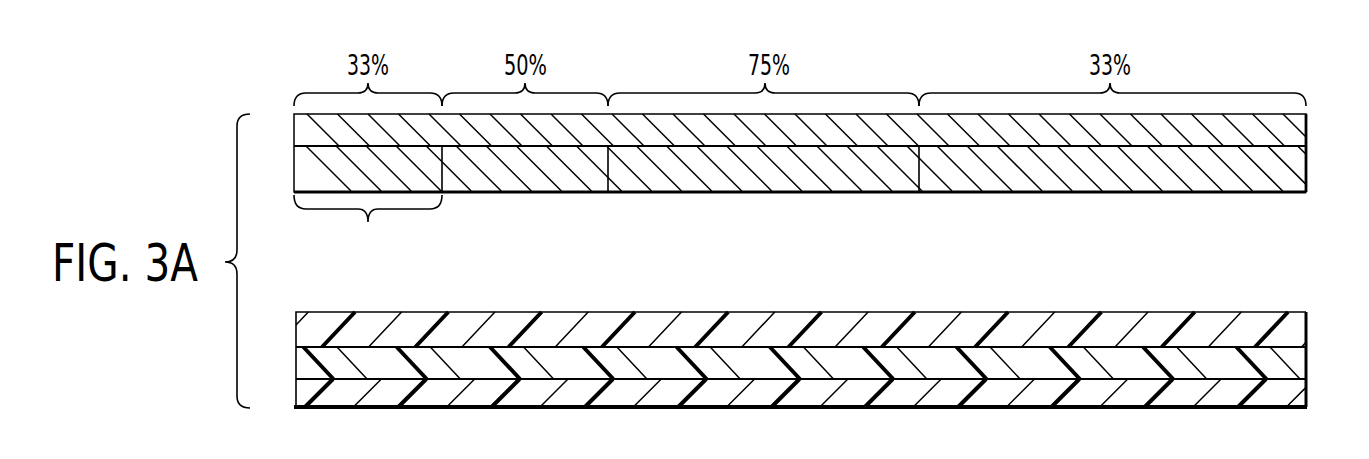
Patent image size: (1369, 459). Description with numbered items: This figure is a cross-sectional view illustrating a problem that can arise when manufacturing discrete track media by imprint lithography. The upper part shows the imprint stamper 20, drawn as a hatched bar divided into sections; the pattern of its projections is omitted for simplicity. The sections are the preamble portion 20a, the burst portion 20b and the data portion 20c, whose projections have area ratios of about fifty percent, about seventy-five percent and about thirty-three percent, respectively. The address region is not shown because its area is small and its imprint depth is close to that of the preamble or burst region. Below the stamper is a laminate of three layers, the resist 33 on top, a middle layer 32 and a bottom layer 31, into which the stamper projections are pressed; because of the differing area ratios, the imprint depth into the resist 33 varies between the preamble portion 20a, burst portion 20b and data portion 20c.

The imprint stamper 20 is at (1300, 131).
The preamble portion 20a is at (608, 195).
The burst portion 20b is at (919, 195).
The data portion 20c is at (1306, 195).
The bottom layer of laminate 31 is at (1300, 391).
The middle layer of laminate 32 is at (1300, 364).
The resist 33 is at (1300, 326).